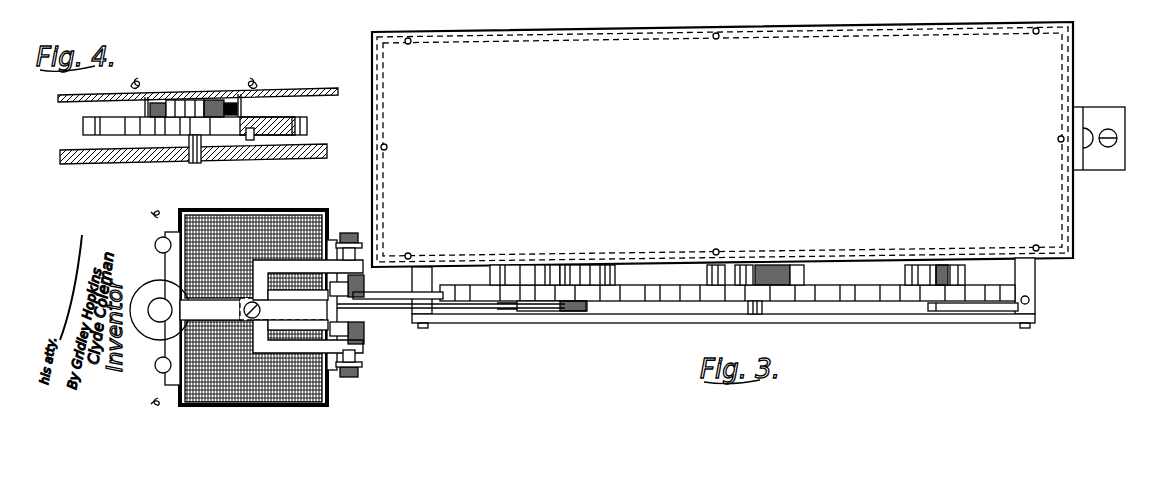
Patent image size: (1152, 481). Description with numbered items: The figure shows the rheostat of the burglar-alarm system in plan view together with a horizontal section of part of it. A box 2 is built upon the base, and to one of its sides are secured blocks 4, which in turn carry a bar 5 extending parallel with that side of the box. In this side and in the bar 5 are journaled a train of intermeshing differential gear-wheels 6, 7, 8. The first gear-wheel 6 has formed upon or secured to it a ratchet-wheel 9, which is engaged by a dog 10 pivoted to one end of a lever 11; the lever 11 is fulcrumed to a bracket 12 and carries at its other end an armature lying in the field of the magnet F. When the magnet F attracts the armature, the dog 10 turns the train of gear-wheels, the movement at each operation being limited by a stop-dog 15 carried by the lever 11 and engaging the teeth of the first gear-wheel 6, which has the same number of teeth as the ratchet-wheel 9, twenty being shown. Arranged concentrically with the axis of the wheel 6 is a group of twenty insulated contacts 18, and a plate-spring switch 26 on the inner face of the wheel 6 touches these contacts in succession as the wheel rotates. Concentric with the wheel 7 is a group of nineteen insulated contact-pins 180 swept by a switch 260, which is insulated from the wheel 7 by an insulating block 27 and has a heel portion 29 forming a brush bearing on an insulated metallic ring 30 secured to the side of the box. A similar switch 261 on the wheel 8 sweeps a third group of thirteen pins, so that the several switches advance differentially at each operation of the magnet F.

In FIG. 4, the box 2 is at (332, 87).
In FIG. 3, the box 2 is at (748, 144).
In FIG. 3, the blocks 4 is at (424, 266).
In FIG. 4, the bar 5 is at (245, 153).
In FIG. 3, the bar 5 is at (690, 320).
In FIG. 3, the first gear-wheel 6 is at (506, 303).
In FIG. 4, the gear-wheel 7 is at (308, 124).
In FIG. 3, the gear-wheel 7 is at (752, 300).
In FIG. 3, the gear-wheel 8 is at (925, 300).
In FIG. 3, the ratchet-wheel 9 is at (566, 310).
In FIG. 3, the dog 10 is at (400, 308).
In FIG. 3, the lever 11 is at (352, 330).
In FIG. 3, the bracket 12 is at (300, 268).
In FIG. 3, the stop-dog 15 is at (372, 297).
In FIG. 3, the contacts 18 is at (520, 264).
In FIG. 3, the switch 26 is at (583, 264).
In FIG. 4, the block 27 is at (245, 115).
In FIG. 4, the heel portion 29 is at (240, 94).
In FIG. 4, the ring 30 is at (214, 99).
In FIG. 3, the ring 30 is at (760, 263).
In FIG. 4, the contact-pins 180 is at (148, 104).
In FIG. 3, the switch 260 is at (720, 263).
In FIG. 3, the switch 261 is at (950, 262).
In FIG. 3, the magnet F is at (262, 404).